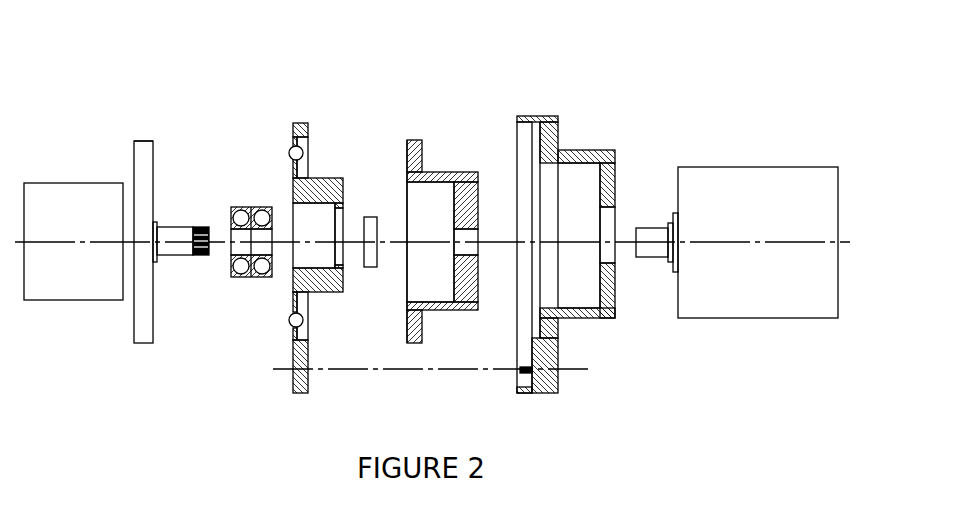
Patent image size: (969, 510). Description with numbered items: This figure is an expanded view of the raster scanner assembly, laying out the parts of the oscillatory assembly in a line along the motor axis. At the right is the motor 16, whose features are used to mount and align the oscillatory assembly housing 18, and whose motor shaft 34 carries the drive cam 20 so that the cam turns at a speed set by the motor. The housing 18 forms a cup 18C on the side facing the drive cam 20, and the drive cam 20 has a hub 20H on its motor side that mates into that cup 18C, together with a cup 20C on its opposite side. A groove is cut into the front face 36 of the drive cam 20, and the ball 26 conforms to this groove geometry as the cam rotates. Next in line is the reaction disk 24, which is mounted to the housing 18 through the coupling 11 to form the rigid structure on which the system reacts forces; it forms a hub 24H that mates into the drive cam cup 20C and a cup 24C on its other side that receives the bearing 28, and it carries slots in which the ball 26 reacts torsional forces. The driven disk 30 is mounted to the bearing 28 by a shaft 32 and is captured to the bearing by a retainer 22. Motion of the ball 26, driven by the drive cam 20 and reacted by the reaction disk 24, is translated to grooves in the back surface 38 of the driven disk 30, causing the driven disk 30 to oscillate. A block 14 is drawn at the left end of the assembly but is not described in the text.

The coupling 11 is at (549, 413).
The housing 14 is at (73, 274).
The motor 16 is at (758, 205).
The oscillatory assembly housing 18 is at (584, 242).
The cup 18C is at (594, 184).
The drive cam 20 is at (454, 205).
The cup 20C is at (381, 320).
The hub 20H is at (452, 307).
The retainer 22 is at (338, 321).
The reaction disk 24 is at (277, 233).
The cup 24C is at (261, 290).
The hub 24H is at (291, 174).
The ball 26 is at (257, 218).
The bearing 28 is at (218, 269).
The driven disk 30 is at (83, 227).
The shaft 32 is at (217, 204).
The motor shaft 34 is at (679, 182).
The front face 36 is at (373, 189).
The back surface 38 is at (172, 118).